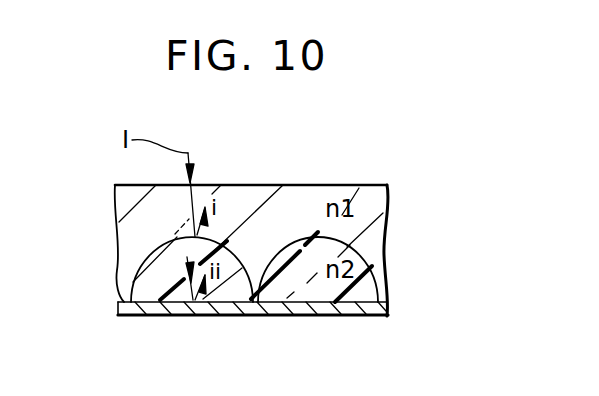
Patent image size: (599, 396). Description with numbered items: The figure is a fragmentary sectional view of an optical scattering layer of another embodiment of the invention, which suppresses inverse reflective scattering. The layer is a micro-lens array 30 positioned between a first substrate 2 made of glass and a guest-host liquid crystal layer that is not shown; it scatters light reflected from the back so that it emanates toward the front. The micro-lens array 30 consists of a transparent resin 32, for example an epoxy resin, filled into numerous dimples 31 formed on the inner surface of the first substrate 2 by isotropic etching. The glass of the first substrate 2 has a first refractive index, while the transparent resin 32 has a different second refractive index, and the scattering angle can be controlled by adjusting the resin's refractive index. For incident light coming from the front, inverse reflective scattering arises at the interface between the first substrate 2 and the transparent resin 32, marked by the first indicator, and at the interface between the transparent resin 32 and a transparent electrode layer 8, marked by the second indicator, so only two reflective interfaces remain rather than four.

The first substrate 2 is at (378, 214).
The transparent electrode layer 8 is at (370, 308).
The micro-lens array 30 is at (103, 235).
The dimples 31 is at (283, 243).
The transparent resin 32 is at (362, 282).